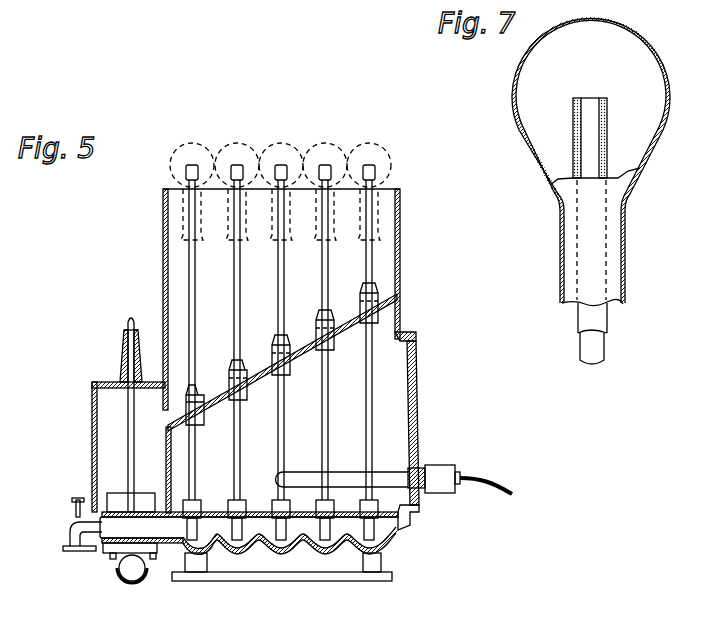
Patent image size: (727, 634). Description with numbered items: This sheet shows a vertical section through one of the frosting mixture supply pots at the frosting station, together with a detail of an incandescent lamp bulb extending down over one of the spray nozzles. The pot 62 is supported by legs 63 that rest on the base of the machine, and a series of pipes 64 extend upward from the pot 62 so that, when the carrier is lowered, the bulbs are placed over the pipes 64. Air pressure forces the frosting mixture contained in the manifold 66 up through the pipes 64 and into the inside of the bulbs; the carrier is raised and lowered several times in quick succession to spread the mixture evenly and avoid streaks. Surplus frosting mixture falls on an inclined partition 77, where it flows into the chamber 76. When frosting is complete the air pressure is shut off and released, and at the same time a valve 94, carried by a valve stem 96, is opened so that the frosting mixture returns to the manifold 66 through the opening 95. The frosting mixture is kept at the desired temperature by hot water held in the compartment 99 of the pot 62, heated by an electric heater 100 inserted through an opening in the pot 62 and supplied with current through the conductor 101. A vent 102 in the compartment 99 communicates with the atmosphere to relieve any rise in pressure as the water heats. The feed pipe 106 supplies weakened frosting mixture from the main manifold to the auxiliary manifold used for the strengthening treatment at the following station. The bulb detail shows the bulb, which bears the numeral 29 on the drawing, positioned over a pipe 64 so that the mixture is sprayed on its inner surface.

In FIG. 5, the bulb envelope 29 is at (363, 145).
In FIG. 7, the bulb envelope 29 is at (665, 80).
In FIG. 5, the pot 62 is at (163, 258).
In FIG. 5, the legs 63 is at (207, 560).
In FIG. 5, the pipes 64 is at (326, 166).
In FIG. 7, the pipes 64 is at (608, 115).
In FIG. 5, the manifold 66 is at (386, 525).
In FIG. 5, the chamber 76 is at (96, 430).
In FIG. 5, the inclined partition 77 is at (258, 370).
In FIG. 5, the valve 94 is at (114, 490).
In FIG. 5, the opening 95 is at (249, 533).
In FIG. 5, the valve stem 96 is at (127, 404).
In FIG. 5, the compartment 99 is at (400, 389).
In FIG. 5, the electric heater 100 is at (345, 470).
In FIG. 5, the conductor 101 is at (495, 477).
In FIG. 5, the vent 102 is at (400, 317).
In FIG. 5, the feed pipe 106 is at (133, 576).